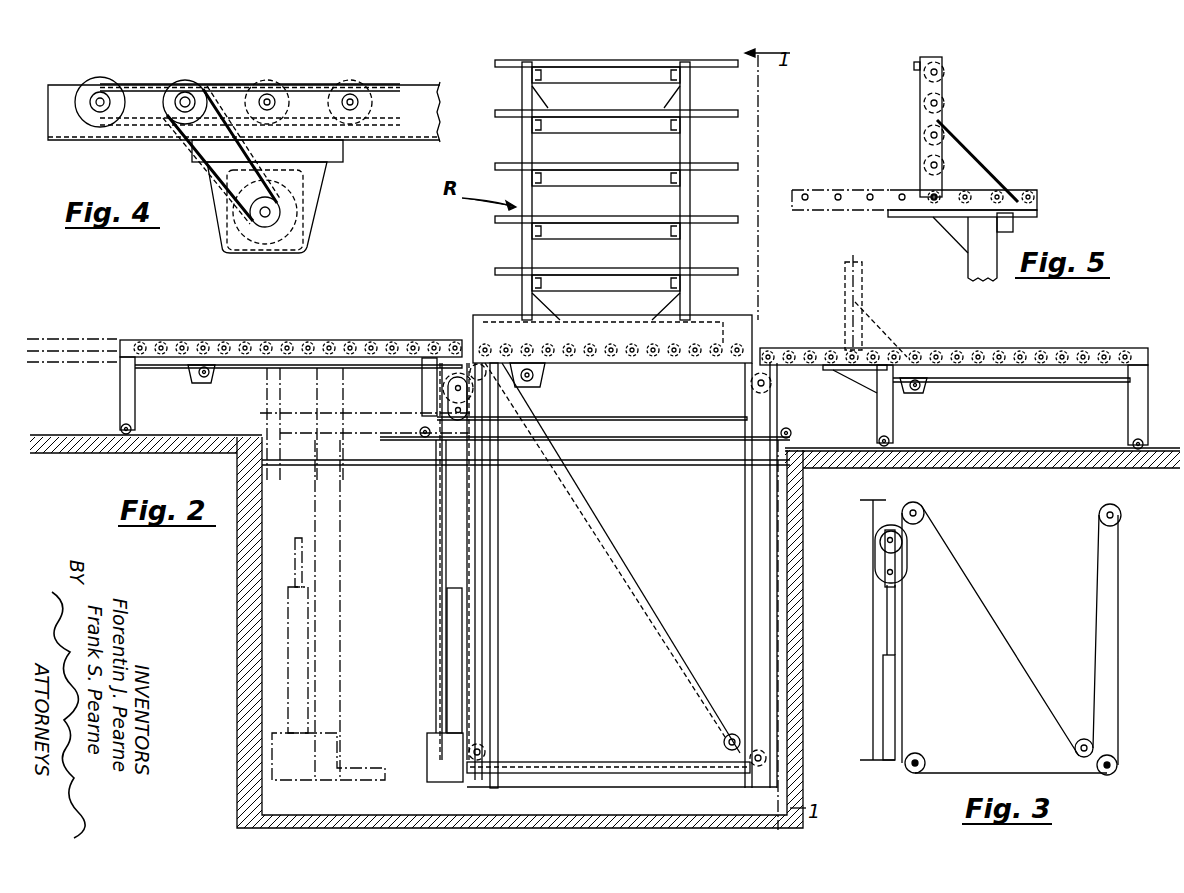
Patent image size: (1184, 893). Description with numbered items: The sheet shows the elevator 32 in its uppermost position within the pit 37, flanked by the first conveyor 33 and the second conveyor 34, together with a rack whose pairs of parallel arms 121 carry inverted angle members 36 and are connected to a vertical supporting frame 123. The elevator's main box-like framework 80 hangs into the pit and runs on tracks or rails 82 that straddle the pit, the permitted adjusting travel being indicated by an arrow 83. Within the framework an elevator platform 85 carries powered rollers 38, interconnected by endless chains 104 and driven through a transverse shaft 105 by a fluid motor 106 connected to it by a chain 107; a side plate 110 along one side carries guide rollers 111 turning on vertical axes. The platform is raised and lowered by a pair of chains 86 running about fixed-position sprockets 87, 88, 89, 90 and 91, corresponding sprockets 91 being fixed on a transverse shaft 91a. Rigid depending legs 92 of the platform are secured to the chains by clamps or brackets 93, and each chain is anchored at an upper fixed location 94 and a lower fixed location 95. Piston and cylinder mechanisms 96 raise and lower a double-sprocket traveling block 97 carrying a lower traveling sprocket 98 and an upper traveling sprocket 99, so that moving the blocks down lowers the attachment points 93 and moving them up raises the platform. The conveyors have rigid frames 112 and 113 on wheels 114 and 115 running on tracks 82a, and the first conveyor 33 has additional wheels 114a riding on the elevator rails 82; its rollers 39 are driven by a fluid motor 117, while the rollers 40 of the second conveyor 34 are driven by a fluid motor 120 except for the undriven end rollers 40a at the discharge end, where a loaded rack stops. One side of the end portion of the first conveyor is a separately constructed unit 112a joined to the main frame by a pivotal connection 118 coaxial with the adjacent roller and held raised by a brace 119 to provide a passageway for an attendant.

In FIG. 2, the elevator 32 is at (600, 310).
In FIG. 2, the first conveyor 33 is at (954, 366).
In FIG. 2, the second conveyor 34 is at (244, 385).
In FIG. 2, the inverted angle members 36 is at (620, 190).
In FIG. 2, the pit 37 is at (245, 603).
In FIG. 4, the powered rollers 38 is at (95, 80).
In FIG. 2, the powered rollers 38 is at (635, 358).
In FIG. 5, the rollers 39 is at (944, 105).
In FIG. 2, the rollers 39 is at (810, 348).
In FIG. 2, the rollers 40 is at (297, 319).
In FIG. 2, the end rollers 40a is at (185, 340).
In FIG. 2, the main box-like framework 80 is at (480, 778).
In FIG. 2, the tracks or rails 82 is at (215, 435).
In FIG. 2, the tracks 82a is at (85, 432).
In FIG. 2, the arrow 83 is at (432, 650).
In FIG. 4, the elevator platform 85 is at (158, 142).
In FIG. 2, the elevator platform 85 is at (650, 365).
In FIG. 2, the chains 86 is at (468, 540).
In FIG. 3, the chains 86 is at (1098, 660).
In FIG. 2, the fixed-position sprocket 87 is at (485, 378).
In FIG. 3, the fixed-position sprocket 87 is at (925, 522).
In FIG. 2, the fixed-position sprocket 88 is at (485, 752).
In FIG. 3, the fixed-position sprocket 88 is at (921, 755).
In FIG. 2, the fixed-position sprocket 89 is at (768, 758).
In FIG. 3, the fixed-position sprocket 89 is at (1095, 766).
In FIG. 2, the fixed-position sprocket 90 is at (772, 398).
In FIG. 3, the fixed-position sprocket 90 is at (1118, 525).
In FIG. 2, the fixed-position sprocket 91 is at (732, 734).
In FIG. 3, the fixed-position sprocket 91 is at (1080, 738).
In FIG. 2, the transverse shaft 91a is at (724, 742).
In FIG. 2, the rigid depending legs 92 is at (745, 400).
In FIG. 3, the clamps or brackets 93 is at (908, 560).
In FIG. 2, the upper fixed location 94 is at (458, 365).
In FIG. 3, the upper fixed location 94 is at (873, 503).
In FIG. 2, the lower fixed location 95 is at (432, 728).
In FIG. 3, the lower fixed location 95 is at (870, 758).
In FIG. 2, the piston and cylinder mechanisms 96 is at (450, 697).
In FIG. 3, the piston and cylinder mechanisms 96 is at (865, 672).
In FIG. 3, the double-sprocket traveling block 97 is at (880, 585).
In FIG. 2, the lower traveling sprocket 98 is at (448, 408).
In FIG. 3, the lower traveling sprocket 98 is at (905, 592).
In FIG. 2, the upper traveling sprocket 99 is at (448, 388).
In FIG. 3, the upper traveling sprocket 99 is at (880, 545).
In FIG. 4, the endless chains 104 is at (133, 82).
In FIG. 4, the transverse shaft 105 is at (185, 95).
In FIG. 4, the fluid motor 106 is at (300, 195).
In FIG. 2, the fluid motor 106 is at (540, 376).
In FIG. 4, the chain 107 is at (222, 190).
In FIG. 2, the side plate 110 is at (611, 321).
In FIG. 2, the guide rollers 111 is at (590, 320).
In FIG. 5, the frame 112 is at (1013, 225).
In FIG. 2, the frame 112 is at (815, 369).
In FIG. 5, the separately constructed unit 112a is at (920, 138).
In FIG. 2, the separately constructed unit 112a is at (845, 268).
In FIG. 2, the frame 113 is at (245, 370).
In FIG. 2, the wheels 114 is at (1140, 450).
In FIG. 2, the additional wheels 114a is at (893, 447).
In FIG. 2, the wheels 115 is at (124, 436).
In FIG. 2, the fluid motor 117 is at (930, 392).
In FIG. 5, the pivotal connection 118 is at (934, 205).
In FIG. 5, the brace 119 is at (985, 170).
In FIG. 2, the brace 119 is at (900, 342).
In FIG. 2, the fluid motor 120 is at (190, 376).
In FIG. 2, the parallel arms 121 is at (665, 128).
In FIG. 2, the supporting frame 123 is at (690, 160).